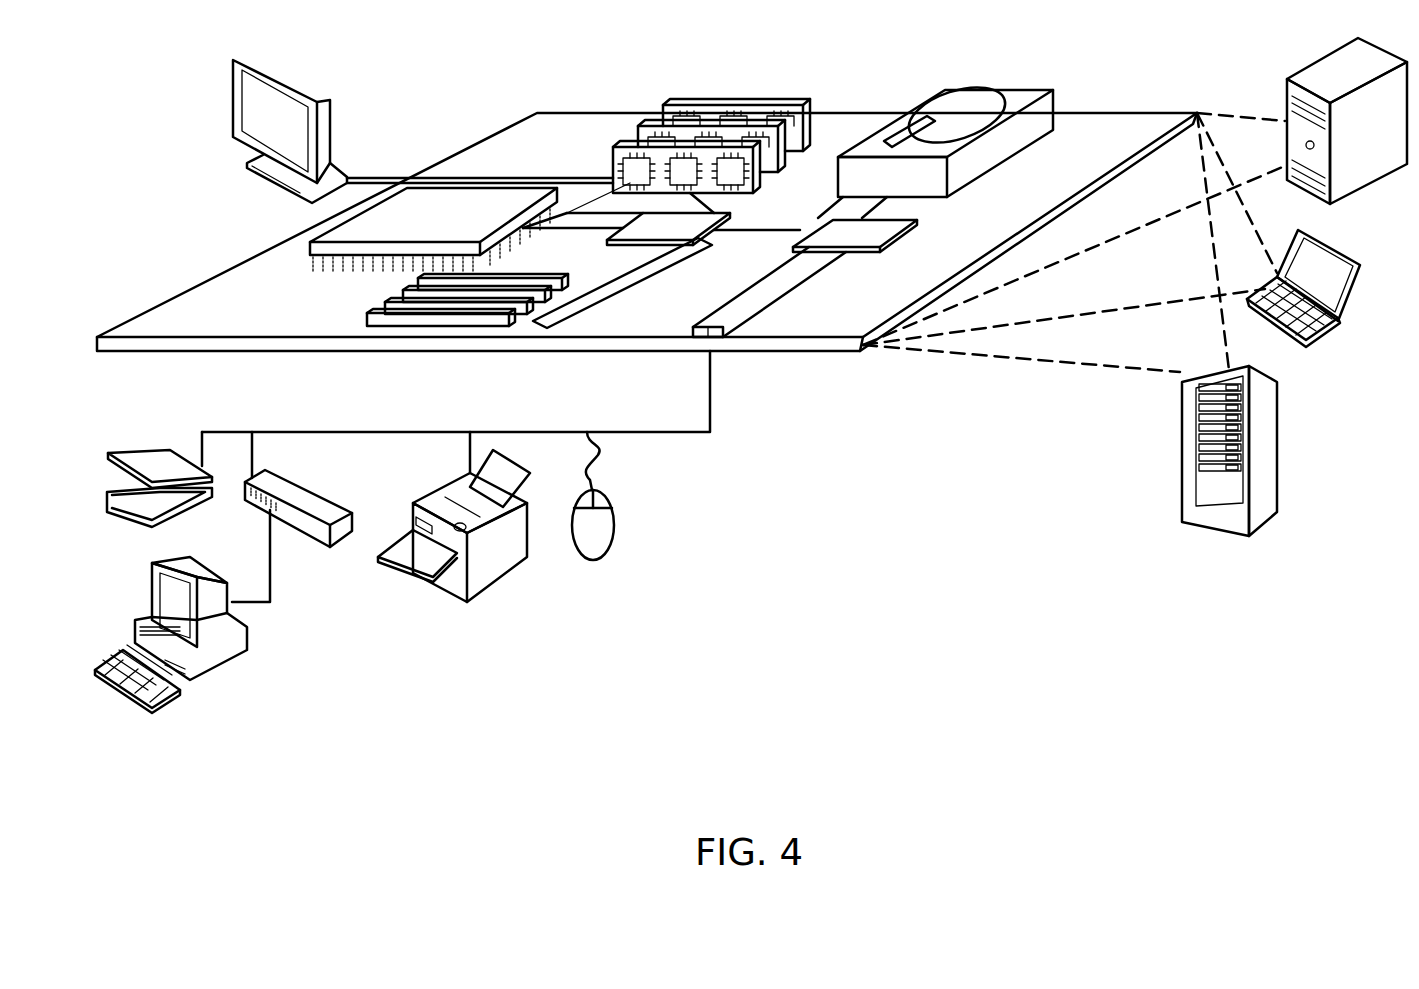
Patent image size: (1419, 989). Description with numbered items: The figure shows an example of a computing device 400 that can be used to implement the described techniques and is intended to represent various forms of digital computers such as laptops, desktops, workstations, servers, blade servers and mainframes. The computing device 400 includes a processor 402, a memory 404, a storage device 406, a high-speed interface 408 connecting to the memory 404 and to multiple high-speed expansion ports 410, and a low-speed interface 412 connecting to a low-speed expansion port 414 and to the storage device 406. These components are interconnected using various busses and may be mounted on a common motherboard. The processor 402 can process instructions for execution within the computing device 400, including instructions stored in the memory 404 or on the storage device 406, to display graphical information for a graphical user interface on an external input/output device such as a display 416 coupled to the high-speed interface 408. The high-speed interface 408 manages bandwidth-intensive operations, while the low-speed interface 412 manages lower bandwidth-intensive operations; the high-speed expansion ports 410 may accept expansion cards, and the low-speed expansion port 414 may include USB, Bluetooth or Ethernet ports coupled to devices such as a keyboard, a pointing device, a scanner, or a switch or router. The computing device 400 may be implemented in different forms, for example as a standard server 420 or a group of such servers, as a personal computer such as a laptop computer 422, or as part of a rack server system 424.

The computing device 400 is at (451, 83).
The processor 402 is at (312, 243).
The memory 404 is at (667, 104).
The storage device 406 is at (940, 92).
The high-speed interface 408 is at (645, 228).
The high-speed expansion ports 410 is at (397, 308).
The low-speed interface 412 is at (838, 232).
The low-speed expansion port 414 is at (718, 334).
The display 416 is at (235, 60).
The standard server 420 is at (1287, 99).
The laptop computer 422 is at (1312, 343).
The rack server system 424 is at (1182, 479).